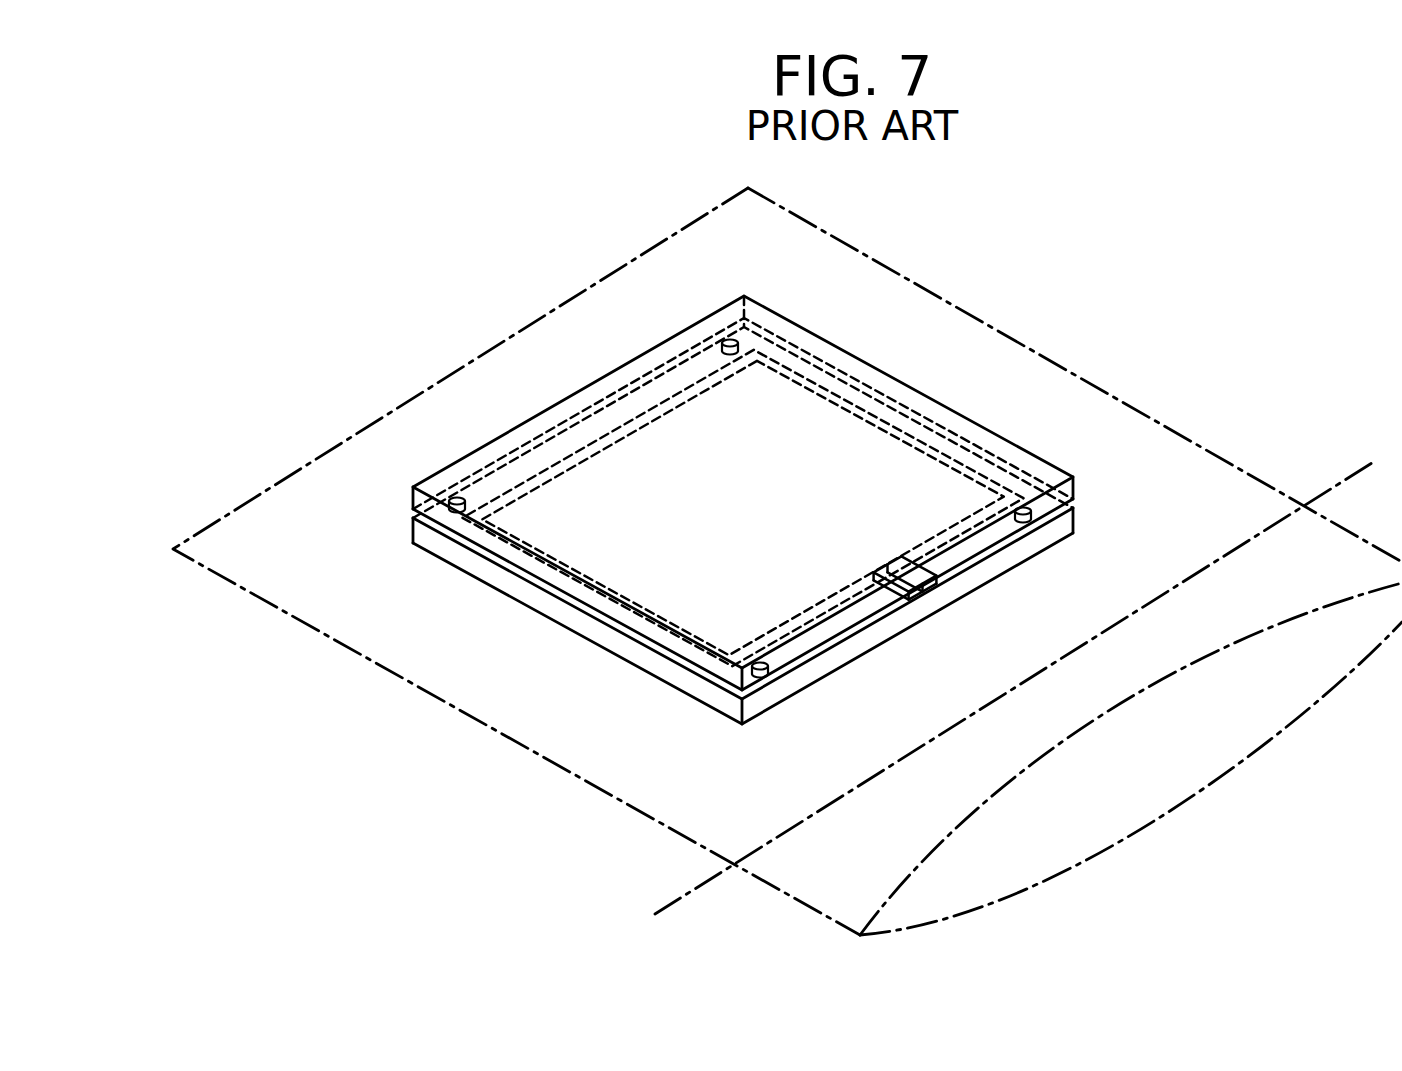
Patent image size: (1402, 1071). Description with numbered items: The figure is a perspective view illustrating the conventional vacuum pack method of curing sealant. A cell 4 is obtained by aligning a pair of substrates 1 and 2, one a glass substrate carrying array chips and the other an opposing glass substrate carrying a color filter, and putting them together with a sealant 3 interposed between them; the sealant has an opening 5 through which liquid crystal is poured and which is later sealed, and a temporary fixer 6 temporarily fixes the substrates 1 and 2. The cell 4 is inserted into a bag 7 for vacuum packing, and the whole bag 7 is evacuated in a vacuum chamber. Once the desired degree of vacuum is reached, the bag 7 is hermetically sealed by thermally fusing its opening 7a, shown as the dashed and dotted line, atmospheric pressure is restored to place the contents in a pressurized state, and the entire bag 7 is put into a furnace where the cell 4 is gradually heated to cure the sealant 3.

The substrate 1 is at (1077, 490).
The substrate 2 is at (1058, 533).
The sealant 3 is at (896, 614).
The cell 4 is at (930, 358).
The opening 5 is at (927, 612).
The temporary fixer 6 is at (728, 335).
The bag 7 is at (1051, 358).
The opening 7a is at (1342, 478).